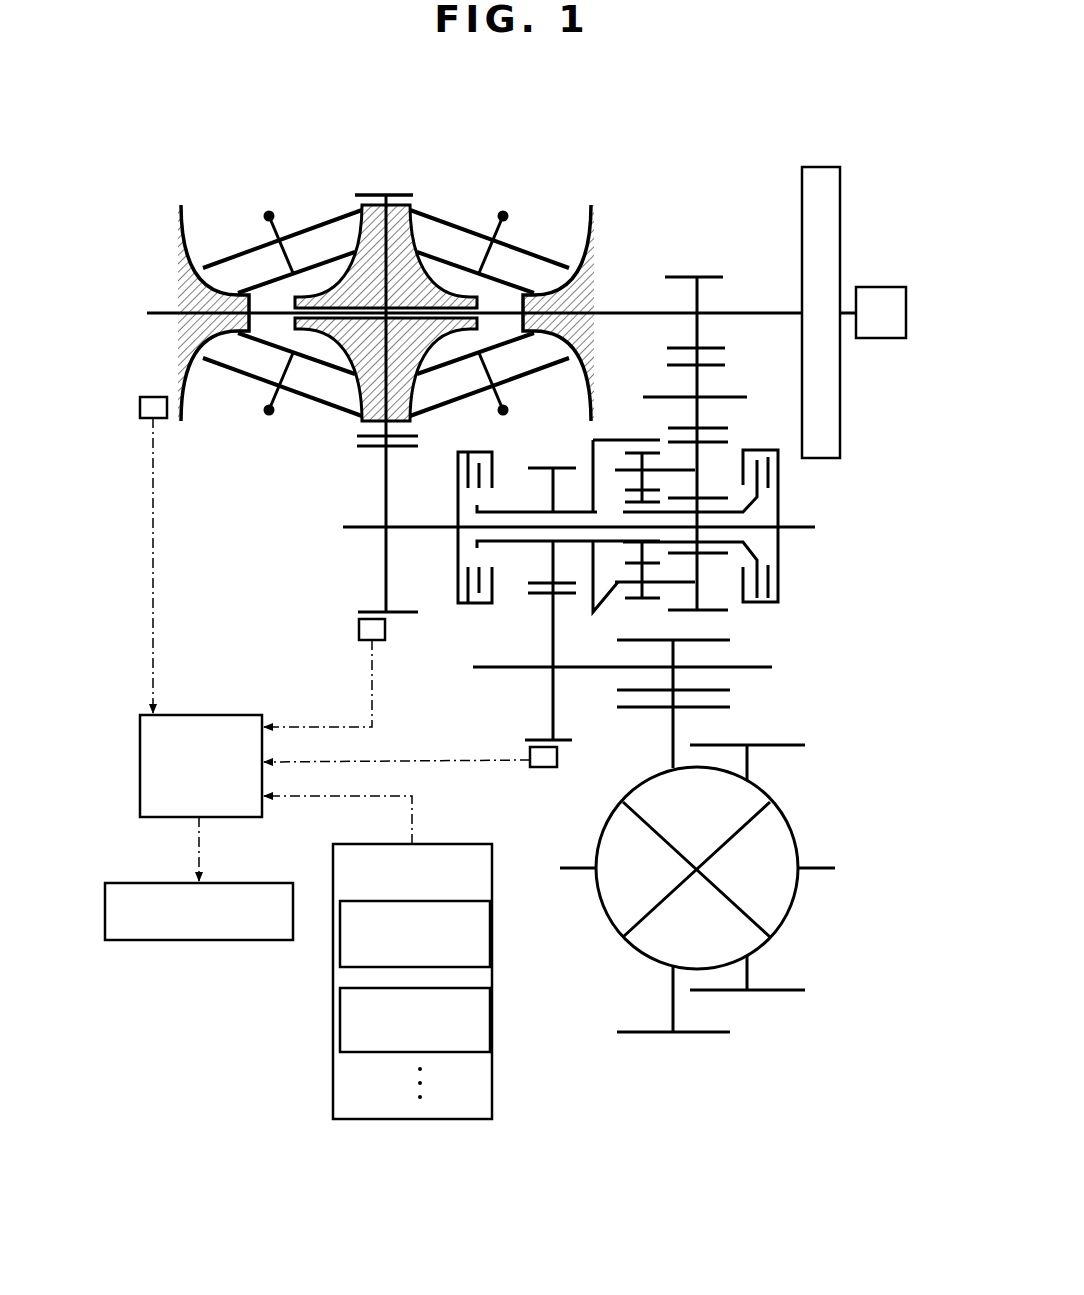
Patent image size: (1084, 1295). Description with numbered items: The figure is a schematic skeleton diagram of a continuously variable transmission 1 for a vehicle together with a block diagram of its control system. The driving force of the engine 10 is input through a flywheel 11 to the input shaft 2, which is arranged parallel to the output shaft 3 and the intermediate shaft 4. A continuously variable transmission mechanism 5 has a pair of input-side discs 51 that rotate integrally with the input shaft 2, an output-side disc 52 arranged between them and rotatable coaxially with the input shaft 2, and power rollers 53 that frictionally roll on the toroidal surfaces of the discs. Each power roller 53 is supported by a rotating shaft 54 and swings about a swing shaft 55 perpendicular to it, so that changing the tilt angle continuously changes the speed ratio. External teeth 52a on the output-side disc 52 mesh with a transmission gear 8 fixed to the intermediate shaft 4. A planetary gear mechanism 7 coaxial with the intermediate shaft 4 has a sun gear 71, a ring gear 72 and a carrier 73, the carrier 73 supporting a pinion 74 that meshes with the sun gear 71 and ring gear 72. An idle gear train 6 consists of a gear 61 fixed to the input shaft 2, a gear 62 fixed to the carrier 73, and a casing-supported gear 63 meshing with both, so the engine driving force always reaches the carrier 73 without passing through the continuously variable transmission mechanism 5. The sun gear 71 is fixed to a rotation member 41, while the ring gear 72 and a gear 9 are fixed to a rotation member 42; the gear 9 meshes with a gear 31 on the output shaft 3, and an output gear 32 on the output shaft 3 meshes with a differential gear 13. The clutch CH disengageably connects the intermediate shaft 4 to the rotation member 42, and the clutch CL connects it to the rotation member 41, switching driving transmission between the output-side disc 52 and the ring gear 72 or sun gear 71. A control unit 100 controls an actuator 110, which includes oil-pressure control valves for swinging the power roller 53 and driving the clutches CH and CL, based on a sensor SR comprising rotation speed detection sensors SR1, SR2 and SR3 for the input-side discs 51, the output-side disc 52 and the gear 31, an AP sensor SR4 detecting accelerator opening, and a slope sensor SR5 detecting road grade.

The continuously variable transmission 1 is at (733, 103).
The input shaft 2 is at (606, 312).
The output shaft 3 is at (493, 669).
The intermediate shaft 4 is at (353, 532).
The continuously variable transmission mechanism 5 is at (522, 171).
The idle gear train 6 is at (700, 258).
The planetary gear mechanism 7 is at (621, 421).
The transmission gear 8 is at (363, 448).
The gear 9 is at (540, 470).
The engine 10 is at (876, 287).
The flywheel 11 is at (823, 167).
The differential gear 13 is at (803, 801).
The gear 31 is at (557, 738).
The output gear 32 is at (733, 690).
The rotation member 41 is at (742, 525).
The rotation member 42 is at (515, 545).
The input-side disc 51 is at (182, 275).
The output-side disc 52 is at (358, 421).
The external teeth 52a is at (400, 193).
The power roller 53 is at (317, 227).
The rotating shaft 54 is at (266, 205).
The swing shaft 55 is at (262, 216).
The gear 61 is at (720, 276).
The gear 62 is at (730, 440).
The gear 63 is at (733, 395).
The sun gear 71 is at (663, 497).
The ring gear 72 is at (636, 440).
The carrier 73 is at (594, 616).
The pinion 74 is at (661, 563).
The control unit 100 is at (210, 715).
The actuator 110 is at (205, 942).
The clutch CH is at (465, 606).
The clutch CL is at (795, 590).
The sensor SR is at (427, 994).
The rotation speed detection sensor SR1 is at (152, 397).
The rotation speed detection sensor SR2 is at (358, 630).
The rotation speed detection sensor SR3 is at (541, 768).
The AP sensor SR4 is at (491, 930).
The slope sensor SR5 is at (491, 1004).